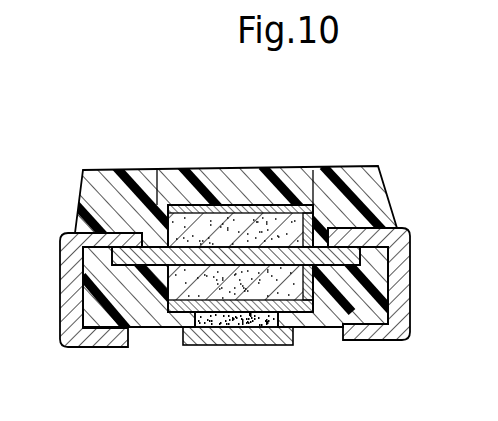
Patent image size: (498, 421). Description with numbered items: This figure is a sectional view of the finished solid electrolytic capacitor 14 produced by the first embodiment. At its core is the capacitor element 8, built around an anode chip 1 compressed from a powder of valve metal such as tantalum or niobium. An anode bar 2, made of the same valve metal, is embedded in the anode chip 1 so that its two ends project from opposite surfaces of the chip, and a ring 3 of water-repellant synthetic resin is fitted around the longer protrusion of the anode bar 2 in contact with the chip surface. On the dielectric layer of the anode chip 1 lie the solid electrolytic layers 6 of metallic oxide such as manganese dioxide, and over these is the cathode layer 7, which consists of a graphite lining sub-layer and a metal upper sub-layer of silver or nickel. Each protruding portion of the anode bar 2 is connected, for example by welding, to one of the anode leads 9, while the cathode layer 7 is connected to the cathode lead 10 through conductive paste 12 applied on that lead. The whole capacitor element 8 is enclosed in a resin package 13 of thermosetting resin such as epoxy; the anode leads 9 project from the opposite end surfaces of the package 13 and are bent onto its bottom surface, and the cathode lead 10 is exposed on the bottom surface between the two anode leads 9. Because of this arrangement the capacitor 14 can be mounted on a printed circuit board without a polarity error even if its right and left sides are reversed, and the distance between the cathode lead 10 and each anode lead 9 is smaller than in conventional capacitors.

The anode chip 1 is at (208, 168).
The anode bar 2 is at (82, 310).
The ring 3 is at (155, 168).
The solid electrolytic layer 6 is at (270, 168).
The cathode layer 7 is at (317, 168).
The capacitor element 8 is at (248, 167).
The anode lead 9 is at (62, 277).
The cathode lead 10 is at (245, 345).
The conductive paste 12 is at (193, 345).
The resin package 13 is at (100, 168).
The solid electrolytic capacitor 14 is at (400, 152).